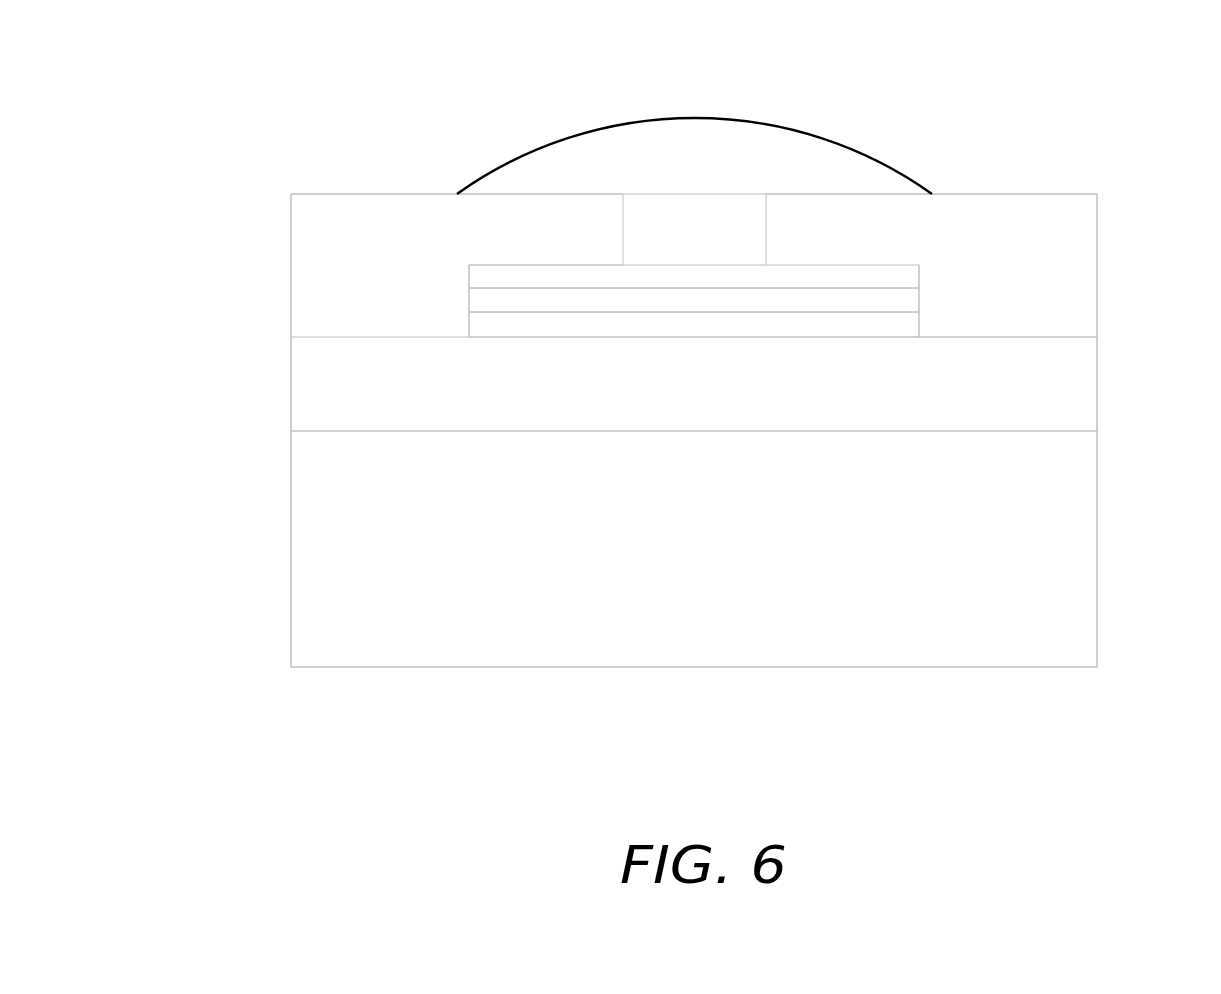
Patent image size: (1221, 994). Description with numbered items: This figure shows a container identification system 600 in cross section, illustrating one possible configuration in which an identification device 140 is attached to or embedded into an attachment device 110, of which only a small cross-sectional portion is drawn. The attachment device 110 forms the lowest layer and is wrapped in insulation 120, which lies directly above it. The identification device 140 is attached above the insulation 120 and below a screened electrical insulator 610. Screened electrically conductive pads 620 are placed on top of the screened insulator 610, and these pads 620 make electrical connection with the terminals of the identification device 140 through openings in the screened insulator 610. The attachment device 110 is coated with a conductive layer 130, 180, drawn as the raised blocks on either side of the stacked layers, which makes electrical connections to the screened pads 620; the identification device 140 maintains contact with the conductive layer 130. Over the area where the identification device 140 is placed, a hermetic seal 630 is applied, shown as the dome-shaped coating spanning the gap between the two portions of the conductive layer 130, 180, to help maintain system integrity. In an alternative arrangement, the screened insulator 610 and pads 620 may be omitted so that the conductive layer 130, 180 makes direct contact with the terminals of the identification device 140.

The container identification system 600 is at (305, 67).
The attachment device 110 is at (1097, 550).
The insulation 120 is at (1097, 408).
The conductive layer 130 is at (291, 265).
The conductive layer 180 is at (1097, 293).
The screened electrically conductive pads 620 is at (843, 265).
The screened electrical insulator 610 is at (920, 300).
The identification device 140 is at (920, 322).
The hermetic seal 630 is at (735, 119).